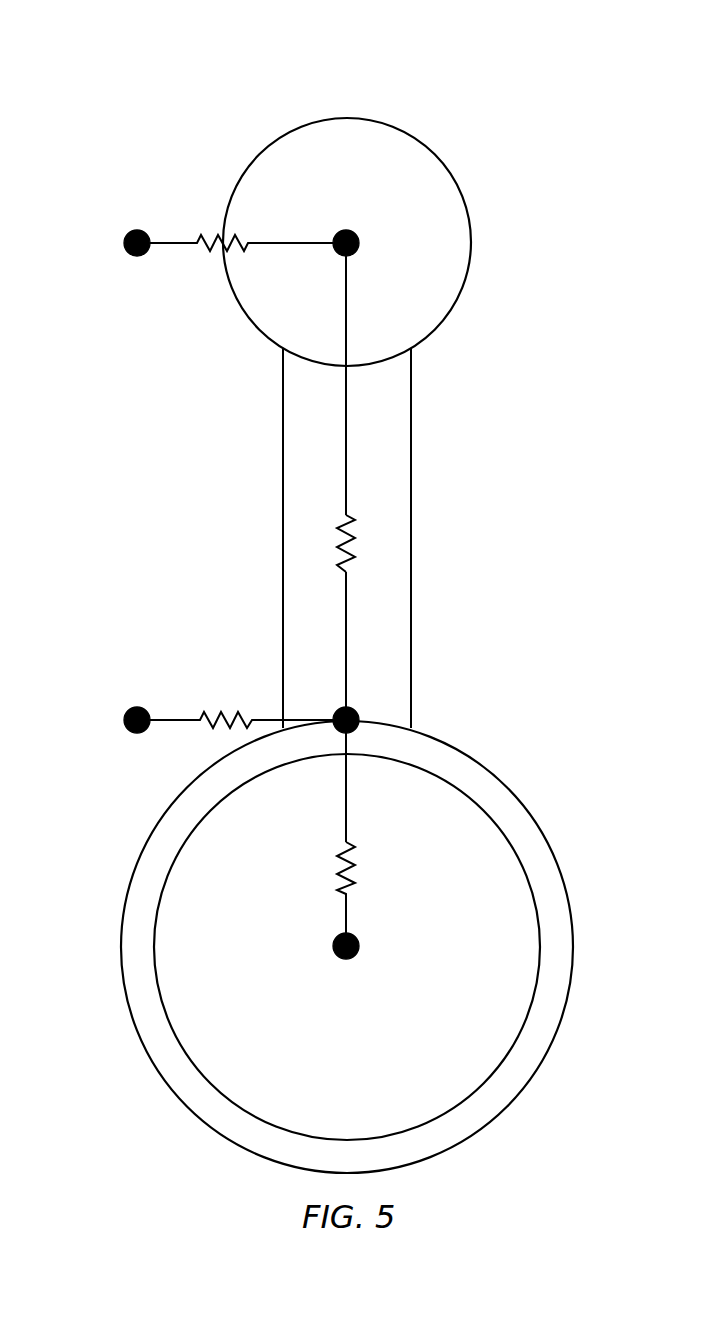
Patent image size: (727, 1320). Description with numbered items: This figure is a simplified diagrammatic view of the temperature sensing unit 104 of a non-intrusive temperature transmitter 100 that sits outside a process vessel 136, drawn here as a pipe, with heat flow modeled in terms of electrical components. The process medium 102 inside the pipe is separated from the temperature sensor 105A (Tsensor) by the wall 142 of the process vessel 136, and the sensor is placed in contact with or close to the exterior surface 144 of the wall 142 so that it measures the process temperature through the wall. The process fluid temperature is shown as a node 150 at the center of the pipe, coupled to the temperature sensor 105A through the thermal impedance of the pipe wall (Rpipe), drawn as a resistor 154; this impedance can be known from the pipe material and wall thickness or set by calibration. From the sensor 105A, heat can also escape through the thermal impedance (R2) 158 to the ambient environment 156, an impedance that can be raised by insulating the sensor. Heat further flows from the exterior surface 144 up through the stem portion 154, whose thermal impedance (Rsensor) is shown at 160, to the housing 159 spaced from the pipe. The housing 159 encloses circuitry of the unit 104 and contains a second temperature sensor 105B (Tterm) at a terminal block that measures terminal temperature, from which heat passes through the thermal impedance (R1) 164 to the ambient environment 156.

The non-intrusive temperature transmitter 100 is at (544, 74).
The temperature sensing unit 104 is at (106, 142).
The housing 159 is at (465, 203).
The temperature sensor (Tterm) 105B is at (359, 236).
The ambient environment 156 is at (129, 254).
The thermal impedance (R1) 164 is at (203, 248).
The stem portion / resistor (Rpipe) 154 is at (411, 438).
The thermal impedance (Rsensor) 160 is at (356, 535).
The thermal impedance (R2) 158 is at (218, 712).
The temperature sensor (Tsensor) 105A is at (356, 706).
The exterior surface 144 is at (510, 768).
The process vessel 136 is at (553, 877).
The process medium 102 is at (182, 967).
The node 150 is at (350, 959).
The wall 142 is at (482, 1114).